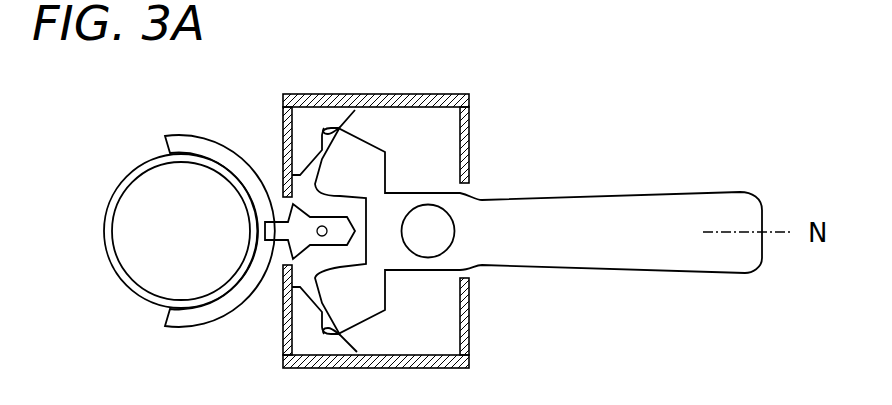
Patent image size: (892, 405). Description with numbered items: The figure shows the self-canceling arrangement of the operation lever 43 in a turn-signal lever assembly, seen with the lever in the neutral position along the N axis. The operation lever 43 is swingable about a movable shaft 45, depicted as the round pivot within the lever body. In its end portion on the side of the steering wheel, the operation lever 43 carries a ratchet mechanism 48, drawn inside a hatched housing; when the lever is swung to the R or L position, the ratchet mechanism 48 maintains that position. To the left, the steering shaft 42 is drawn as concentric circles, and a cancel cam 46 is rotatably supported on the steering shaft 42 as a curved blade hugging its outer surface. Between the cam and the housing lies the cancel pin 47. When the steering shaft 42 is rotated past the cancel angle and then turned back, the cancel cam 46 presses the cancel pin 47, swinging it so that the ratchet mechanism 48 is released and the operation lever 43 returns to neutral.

The steering shaft 42 is at (153, 277).
The operation lever 43 is at (640, 192).
The movable shaft 45 is at (453, 230).
The cancel cam 46 is at (204, 143).
The cancel pin 47 is at (292, 241).
The ratchet mechanism 48 is at (332, 127).